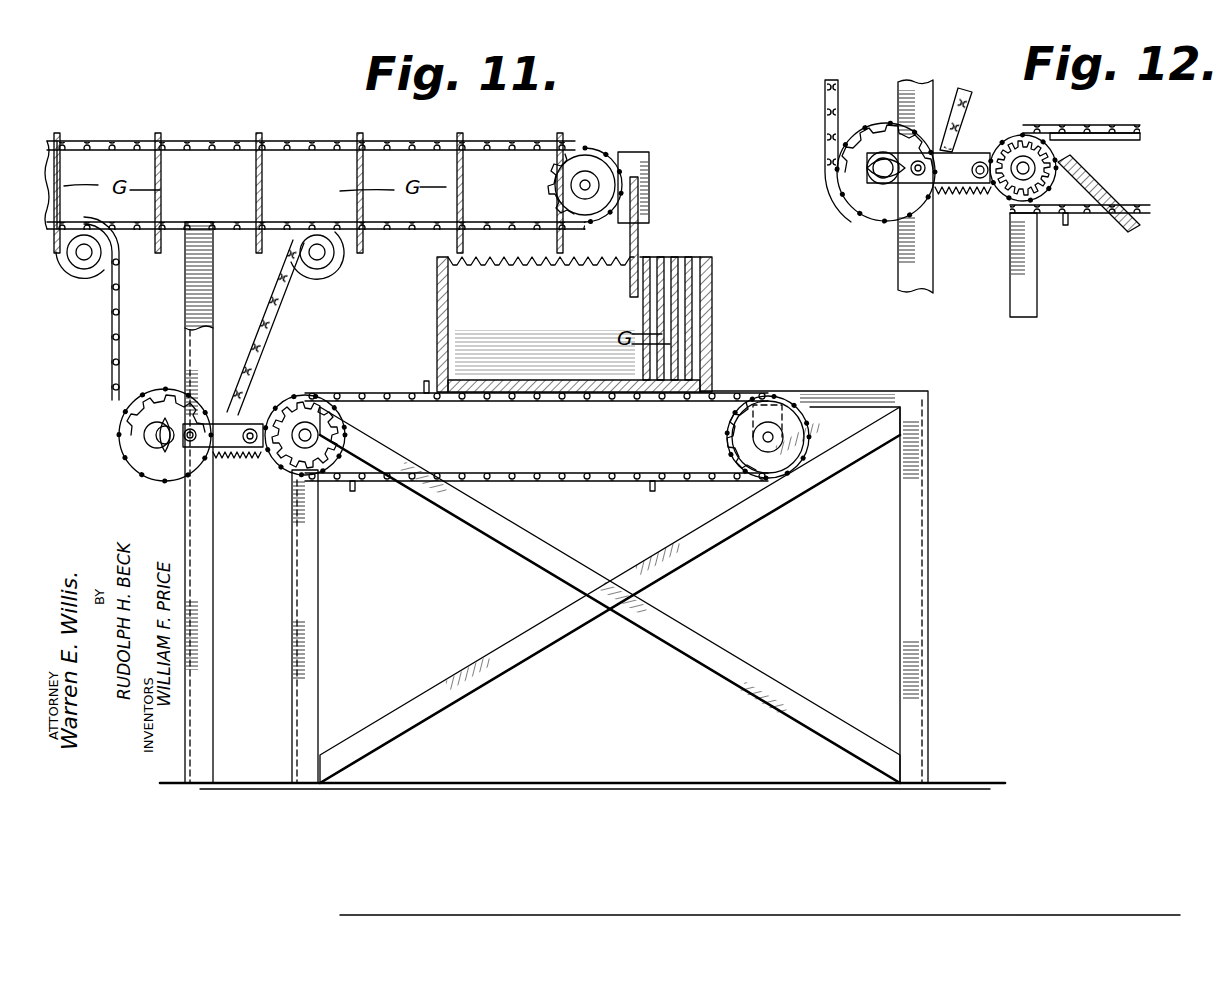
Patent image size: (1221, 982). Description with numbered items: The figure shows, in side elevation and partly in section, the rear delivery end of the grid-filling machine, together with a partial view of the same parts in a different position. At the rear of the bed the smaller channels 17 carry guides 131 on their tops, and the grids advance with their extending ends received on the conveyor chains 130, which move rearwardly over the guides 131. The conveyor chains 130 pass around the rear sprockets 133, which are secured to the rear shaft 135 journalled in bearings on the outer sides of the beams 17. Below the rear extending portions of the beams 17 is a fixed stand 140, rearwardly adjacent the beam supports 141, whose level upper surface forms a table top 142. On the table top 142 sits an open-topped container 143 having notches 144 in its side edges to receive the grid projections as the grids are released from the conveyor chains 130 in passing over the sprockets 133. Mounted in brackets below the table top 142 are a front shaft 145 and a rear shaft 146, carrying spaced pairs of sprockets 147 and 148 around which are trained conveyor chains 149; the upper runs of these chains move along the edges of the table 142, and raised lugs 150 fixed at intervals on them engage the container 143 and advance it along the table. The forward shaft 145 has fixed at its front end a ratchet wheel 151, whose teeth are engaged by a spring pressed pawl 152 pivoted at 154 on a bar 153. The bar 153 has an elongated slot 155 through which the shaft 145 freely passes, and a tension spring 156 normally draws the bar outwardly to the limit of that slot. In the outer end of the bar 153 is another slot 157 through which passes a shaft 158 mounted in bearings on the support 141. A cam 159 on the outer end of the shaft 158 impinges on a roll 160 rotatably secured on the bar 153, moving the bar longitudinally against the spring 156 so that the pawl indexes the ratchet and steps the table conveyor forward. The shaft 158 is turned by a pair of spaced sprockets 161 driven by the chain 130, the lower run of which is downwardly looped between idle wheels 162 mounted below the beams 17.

In FIG. 11, the smaller channels 17 is at (190, 167).
In FIG. 11, the conveyor chains 130 is at (606, 150).
In FIG. 12, the conveyor chains 130 is at (826, 101).
In FIG. 11, the guides 131 is at (528, 141).
In FIG. 11, the rear sprockets 133 is at (612, 189).
In FIG. 11, the rear shaft 135 is at (586, 182).
In FIG. 11, the fixed stand 140 is at (648, 624).
In FIG. 12, the fixed stand 140 is at (1038, 288).
In FIG. 11, the beam supports 141 is at (204, 623).
In FIG. 12, the beam supports 141 is at (900, 286).
In FIG. 11, the table top 142 is at (857, 392).
In FIG. 12, the table top 142 is at (1141, 136).
In FIG. 11, the container 143 is at (713, 330).
In FIG. 11, the notches 144 is at (534, 258).
In FIG. 11, the front shaft 145 is at (348, 394).
In FIG. 12, the front shaft 145 is at (1032, 158).
In FIG. 11, the rear shaft 146 is at (764, 437).
In FIG. 11, the front sprockets 147 is at (356, 450).
In FIG. 12, the front sprockets 147 is at (1050, 156).
In FIG. 11, the rear sprockets 148 is at (800, 436).
In FIG. 11, the conveyor chains 149 is at (568, 479).
In FIG. 12, the conveyor chains 149 is at (1094, 126).
In FIG. 11, the raised lugs 150 is at (430, 393).
In FIG. 12, the raised lugs 150 is at (1066, 222).
In FIG. 11, the ratchet wheel 151 is at (306, 472).
In FIG. 12, the ratchet wheel 151 is at (1046, 176).
In FIG. 11, the spring pressed pawl 152 is at (257, 420).
In FIG. 12, the spring pressed pawl 152 is at (997, 152).
In FIG. 11, the bar 153 is at (238, 428).
In FIG. 12, the bar 153 is at (956, 155).
In FIG. 11, the pivot 154 is at (257, 458).
In FIG. 12, the pivot 154 is at (980, 182).
In FIG. 11, the elongated slot 155 is at (318, 396).
In FIG. 12, the elongated slot 155 is at (1058, 170).
In FIG. 11, the tension spring 156 is at (221, 455).
In FIG. 12, the tension spring 156 is at (948, 195).
In FIG. 11, the slot 157 is at (142, 431).
In FIG. 11, the shaft 158 is at (150, 446).
In FIG. 12, the shaft 158 is at (874, 180).
In FIG. 11, the cam 159 is at (163, 392).
In FIG. 12, the cam 159 is at (876, 162).
In FIG. 11, the roll 160 is at (192, 428).
In FIG. 12, the roll 160 is at (916, 176).
In FIG. 11, the sprockets 161 is at (140, 416).
In FIG. 12, the sprockets 161 is at (852, 151).
In FIG. 11, the idle wheels 162 is at (88, 266).